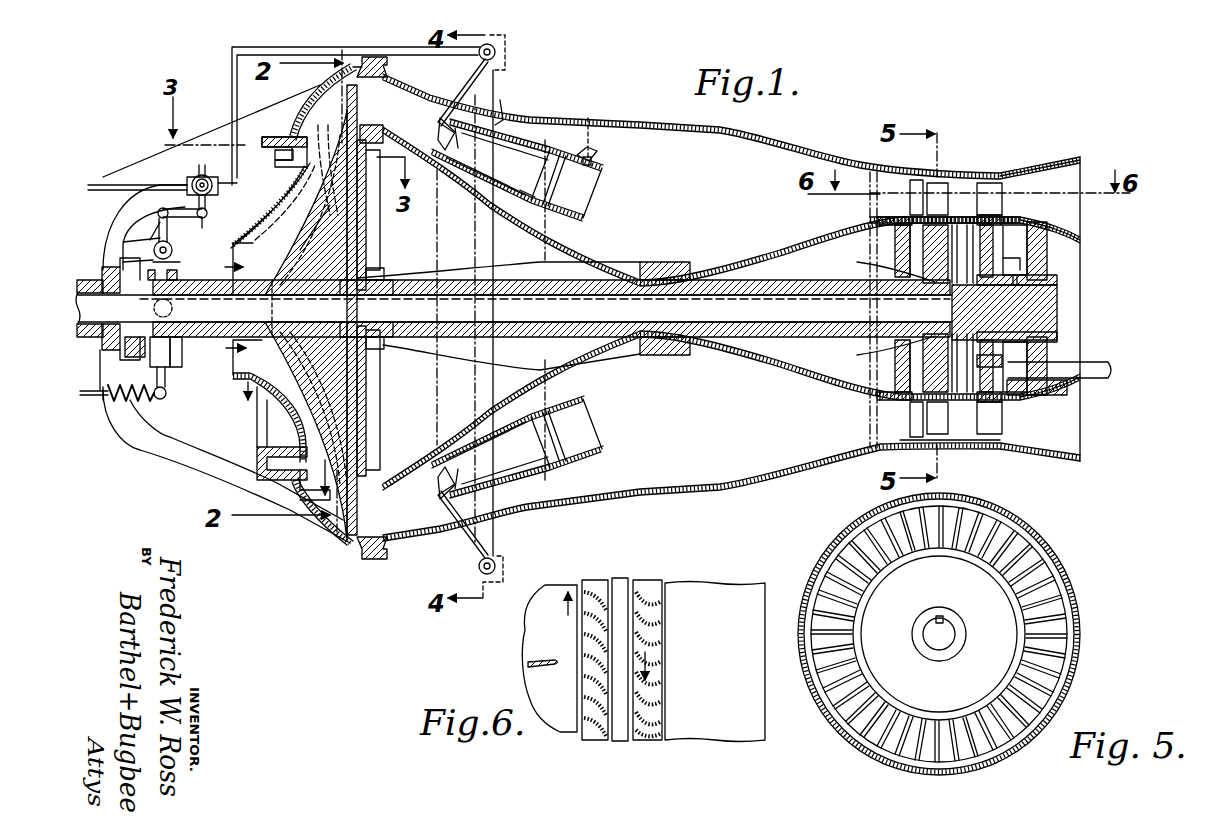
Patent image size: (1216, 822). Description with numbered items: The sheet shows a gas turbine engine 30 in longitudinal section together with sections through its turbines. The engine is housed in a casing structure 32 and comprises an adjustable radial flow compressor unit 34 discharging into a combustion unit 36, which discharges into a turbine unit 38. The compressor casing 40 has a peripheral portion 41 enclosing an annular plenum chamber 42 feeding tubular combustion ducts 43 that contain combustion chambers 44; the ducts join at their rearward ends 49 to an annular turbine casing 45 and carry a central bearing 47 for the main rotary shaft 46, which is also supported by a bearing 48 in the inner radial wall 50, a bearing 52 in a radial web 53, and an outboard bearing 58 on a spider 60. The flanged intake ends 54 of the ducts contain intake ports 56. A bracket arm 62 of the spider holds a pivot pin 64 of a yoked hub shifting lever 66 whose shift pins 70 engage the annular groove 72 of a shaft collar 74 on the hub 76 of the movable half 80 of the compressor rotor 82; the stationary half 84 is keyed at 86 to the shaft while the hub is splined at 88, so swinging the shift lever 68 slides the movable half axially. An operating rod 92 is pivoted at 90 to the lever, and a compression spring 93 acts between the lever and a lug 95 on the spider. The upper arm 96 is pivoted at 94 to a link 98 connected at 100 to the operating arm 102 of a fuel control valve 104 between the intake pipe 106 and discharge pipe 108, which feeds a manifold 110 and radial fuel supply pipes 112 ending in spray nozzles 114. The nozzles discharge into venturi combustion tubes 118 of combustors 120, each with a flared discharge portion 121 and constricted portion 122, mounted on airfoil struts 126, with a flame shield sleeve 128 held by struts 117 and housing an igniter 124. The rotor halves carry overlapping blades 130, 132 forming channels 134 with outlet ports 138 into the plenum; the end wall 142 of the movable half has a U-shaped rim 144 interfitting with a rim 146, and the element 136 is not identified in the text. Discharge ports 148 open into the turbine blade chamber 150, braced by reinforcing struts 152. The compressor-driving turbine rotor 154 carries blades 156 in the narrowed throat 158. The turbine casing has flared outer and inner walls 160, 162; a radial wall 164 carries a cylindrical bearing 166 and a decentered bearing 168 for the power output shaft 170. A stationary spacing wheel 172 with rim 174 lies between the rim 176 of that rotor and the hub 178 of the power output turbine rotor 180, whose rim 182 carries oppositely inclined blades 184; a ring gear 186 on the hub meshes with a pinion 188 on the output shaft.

In FIG. 1, the gas turbine engine 30 is at (617, 100).
In FIG. 1, the casing or housing structure 32 is at (546, 112).
In FIG. 1, the adjustable radial flow compressor unit 34 is at (278, 118).
In FIG. 1, the combustion unit 36 is at (680, 128).
In FIG. 1, the turbine unit 38 is at (978, 158).
In FIG. 1, the compressor casing 40 is at (372, 398).
In FIG. 1, the annular outer or peripheral portion 41 is at (316, 102).
In FIG. 1, the annular plenum chamber 42 is at (343, 90).
In FIG. 1, the tubular combustion ducts 43 is at (788, 140).
In FIG. 1, the combustion chambers 44 is at (646, 122).
In FIG. 1, the annular turbine casing 45 is at (943, 165).
In FIG. 5, the annular turbine casing 45 is at (1068, 586).
In FIG. 1, the main rotary shaft 46 is at (540, 316).
In FIG. 1, the central bearing 47 is at (703, 277).
In FIG. 1, the bearing 48 is at (385, 288).
In FIG. 1, the rearward ends 49 is at (870, 274).
In FIG. 1, the inner radial wall 50 is at (365, 428).
In FIG. 1, the bearing 52 is at (888, 264).
In FIG. 1, the radial web 53 is at (895, 360).
In FIG. 1, the intake ends 54 is at (378, 58).
In FIG. 1, the intake ports 56 is at (390, 90).
In FIG. 1, the outboard bearing 58 is at (85, 275).
In FIG. 1, the spider 60 is at (172, 462).
In FIG. 1, the bracket arm 62 is at (148, 235).
In FIG. 1, the pivot pin 64 is at (172, 250).
In FIG. 1, the yoked compressor hub shifting lever 66 is at (175, 266).
In FIG. 1, the shift lever 68 is at (155, 374).
In FIG. 1, the shift pins 70 is at (172, 308).
In FIG. 1, the annular groove 72 is at (150, 355).
In FIG. 1, the shaft collar 74 is at (133, 344).
In FIG. 1, the hub 76 is at (183, 348).
In FIG. 1, the movable half 80 is at (233, 385).
In FIG. 1, the radial flow compressor rotor 82 is at (239, 398).
In FIG. 1, the stationary half 84 is at (364, 228).
In FIG. 1, the keyed connection 86 is at (333, 300).
In FIG. 1, the splined connection 88 is at (243, 300).
In FIG. 1, the pivotal connection 90 is at (165, 398).
In FIG. 1, the operating rod 92 is at (90, 397).
In FIG. 1, the compression spring 93 is at (128, 398).
In FIG. 1, the pivotal connection 94 is at (144, 225).
In FIG. 1, the lug 95 is at (102, 384).
In FIG. 1, the upper arm 96 is at (170, 228).
In FIG. 1, the link 98 is at (155, 204).
In FIG. 1, the pivotal connection 100 is at (212, 228).
In FIG. 1, the operating arm 102 is at (185, 204).
In FIG. 1, the liquid fuel control valve 104 is at (203, 163).
In FIG. 1, the liquid fuel intake pipe 106 is at (103, 182).
In FIG. 1, the liquid fuel discharge pipe 108 is at (230, 64).
In FIG. 1, the annular manifold or distribution pipe 110 is at (496, 53).
In FIG. 1, the fuel supply pipes 112 is at (465, 82).
In FIG. 1, the spray nozzles 114 is at (436, 136).
In FIG. 1, the radial struts 117 is at (560, 460).
In FIG. 1, the combustion tubes 118 is at (492, 140).
In FIG. 1, the combustors 120 is at (600, 200).
In FIG. 1, the outwardly-flared discharge portion 121 is at (525, 188).
In FIG. 1, the constricted portions 122 is at (470, 170).
In FIG. 1, the igniter 124 is at (503, 104).
In FIG. 1, the struts 126 is at (530, 128).
In FIG. 1, the flame shield or sleeve 128 is at (597, 148).
In FIG. 1, the vanes or blades 130 is at (290, 252).
In FIG. 1, the vanes or blades 132 is at (368, 177).
In FIG. 1, the radial blade channels 134 is at (300, 180).
In FIG. 1, the seal 136 is at (233, 357).
In FIG. 1, the outlet ports 138 is at (319, 167).
In FIG. 1, the end wall 142 is at (247, 238).
In FIG. 1, the annular outer rim 144 is at (284, 166).
In FIG. 1, the annular rim 146 is at (278, 138).
In FIG. 5, the annular rim 146 is at (958, 648).
In FIG. 1, the discharge ports 148 is at (848, 165).
In FIG. 1, the annular turbine blade chamber 150 is at (975, 182).
In FIG. 1, the reinforcing struts 152 is at (876, 410).
In FIG. 6, the reinforcing struts 152 is at (552, 656).
In FIG. 1, the compressor-driving turbine rotor 154 is at (926, 308).
In FIG. 5, the compressor-driving turbine rotor 154 is at (948, 582).
In FIG. 1, the peripheral blades or vanes 156 is at (935, 442).
In FIG. 5, the peripheral blades or vanes 156 is at (1040, 555).
In FIG. 6, the peripheral blades or vanes 156 is at (582, 578).
In FIG. 1, the narrowed throat 158 is at (953, 195).
In FIG. 1, the outer wall 160 is at (1005, 168).
In FIG. 1, the inner wall 162 is at (1082, 236).
In FIG. 6, the inner wall 162 is at (733, 583).
In FIG. 1, the radial wall 164 is at (1045, 253).
In FIG. 1, the elongated cylindrical bearing 166 is at (1058, 337).
In FIG. 1, the decentered shaft bearing 168 is at (1068, 385).
In FIG. 1, the power output shaft 170 is at (1103, 363).
In FIG. 1, the stationary spacing wheel 172 is at (958, 445).
In FIG. 1, the annular rim 174 is at (978, 450).
In FIG. 6, the annular rim 174 is at (622, 578).
In FIG. 1, the rim 176 is at (915, 420).
In FIG. 5, the rim 176 is at (1009, 590).
In FIG. 6, the rim 176 is at (598, 578).
In FIG. 1, the hub 178 is at (1003, 262).
In FIG. 1, the power output turbine rotor 180 is at (1000, 452).
In FIG. 1, the rim 182 is at (1003, 214).
In FIG. 6, the rim 182 is at (660, 580).
In FIG. 1, the blades or vanes 184 is at (991, 205).
In FIG. 6, the blades or vanes 184 is at (660, 620).
In FIG. 1, the ring gear 186 is at (1040, 266).
In FIG. 1, the pinion 188 is at (1038, 402).